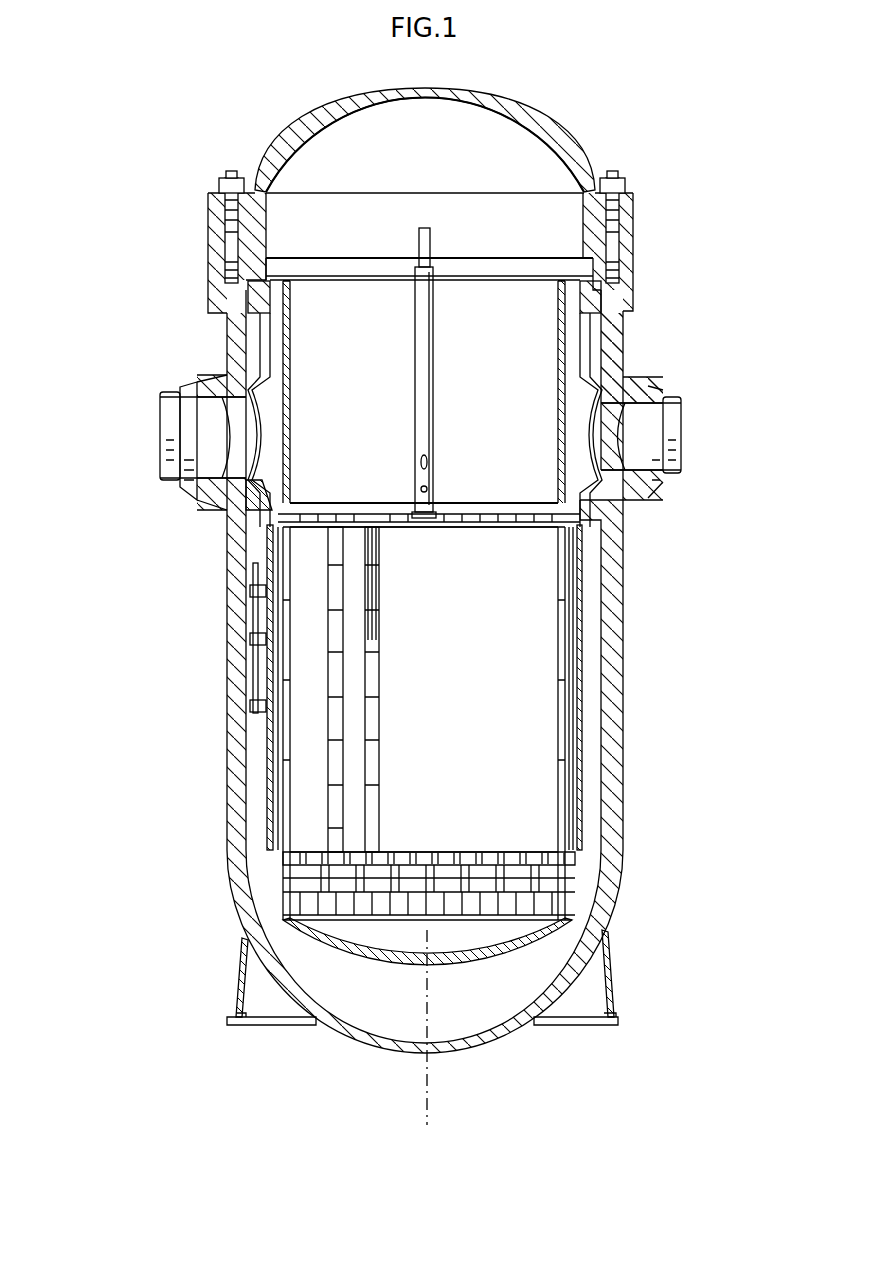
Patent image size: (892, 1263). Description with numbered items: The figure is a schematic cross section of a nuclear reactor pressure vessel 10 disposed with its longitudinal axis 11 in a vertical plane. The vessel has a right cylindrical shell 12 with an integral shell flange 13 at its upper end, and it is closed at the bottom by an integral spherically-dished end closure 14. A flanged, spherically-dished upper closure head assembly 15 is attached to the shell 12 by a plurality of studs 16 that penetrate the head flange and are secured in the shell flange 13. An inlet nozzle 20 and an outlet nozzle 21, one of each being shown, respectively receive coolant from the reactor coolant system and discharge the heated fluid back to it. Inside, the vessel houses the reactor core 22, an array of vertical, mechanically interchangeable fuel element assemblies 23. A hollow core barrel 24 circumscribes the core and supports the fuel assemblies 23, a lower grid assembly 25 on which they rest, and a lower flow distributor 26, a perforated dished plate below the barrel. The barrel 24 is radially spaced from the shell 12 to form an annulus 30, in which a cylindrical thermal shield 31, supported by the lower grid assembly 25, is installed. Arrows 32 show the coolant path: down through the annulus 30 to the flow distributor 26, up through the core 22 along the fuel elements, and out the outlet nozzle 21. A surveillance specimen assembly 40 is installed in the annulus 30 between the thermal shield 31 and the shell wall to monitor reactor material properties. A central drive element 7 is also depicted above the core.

The control rod drive shaft 7 is at (434, 487).
The nuclear reactor pressure vessel 10 is at (642, 556).
The longitudinal axis 11 is at (428, 1099).
The right cylindrical shell 12 is at (615, 654).
The integral shell flange 13 is at (628, 293).
The integral spherically-dished end closure 14 is at (600, 992).
The flanged upper closure head assembly 15 is at (550, 137).
The studs 16 is at (232, 228).
The inlet nozzles 20 is at (681, 408).
The outlet nozzles 21 is at (172, 412).
The reactor core 22 is at (449, 614).
The fuel element assemblies 23 is at (377, 686).
The core barrel 24 is at (557, 648).
The lower grid assembly 25 is at (456, 860).
The lower flow distributor 26 is at (506, 955).
The annulus 30 is at (606, 694).
The cylindrical thermal shield 31 is at (583, 618).
The arrows 32 is at (282, 422).
The surveillance specimen assemblies 40 is at (254, 617).